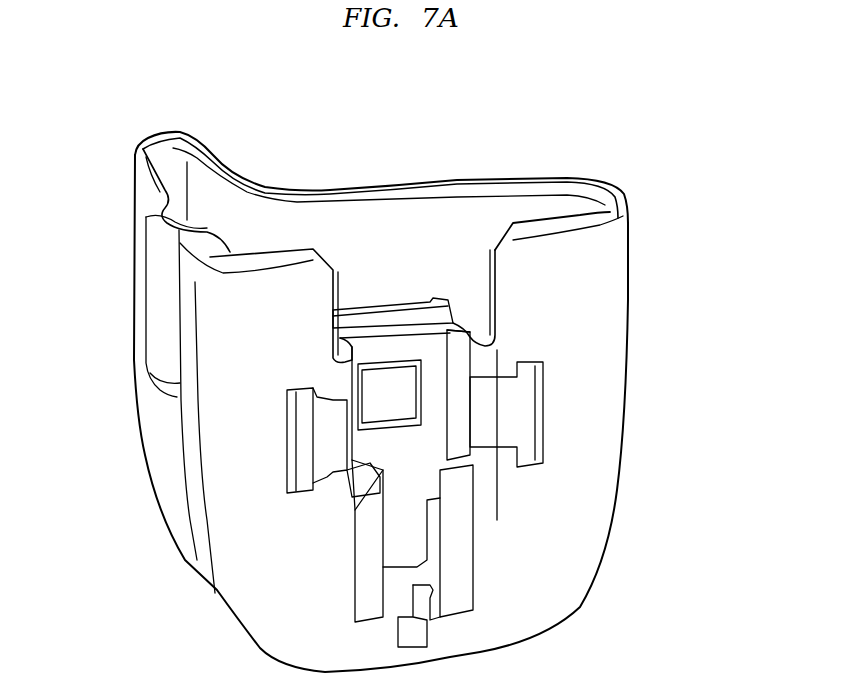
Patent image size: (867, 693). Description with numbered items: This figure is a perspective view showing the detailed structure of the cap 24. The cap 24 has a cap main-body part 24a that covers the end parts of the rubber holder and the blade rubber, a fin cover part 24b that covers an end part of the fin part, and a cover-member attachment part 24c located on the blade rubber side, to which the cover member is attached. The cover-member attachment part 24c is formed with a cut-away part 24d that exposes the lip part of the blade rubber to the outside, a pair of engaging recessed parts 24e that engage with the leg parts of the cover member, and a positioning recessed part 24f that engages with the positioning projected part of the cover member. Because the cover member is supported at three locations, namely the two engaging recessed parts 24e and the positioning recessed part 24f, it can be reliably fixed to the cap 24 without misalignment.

The cap 24 is at (628, 252).
The cap main-body part 24a is at (373, 250).
The fin cover part 24b is at (147, 192).
The cover-member attachment part 24c is at (557, 310).
The cut-away part 24d is at (495, 290).
The engaging recessed parts 24e is at (533, 410).
The positioning recessed part 24f is at (410, 633).